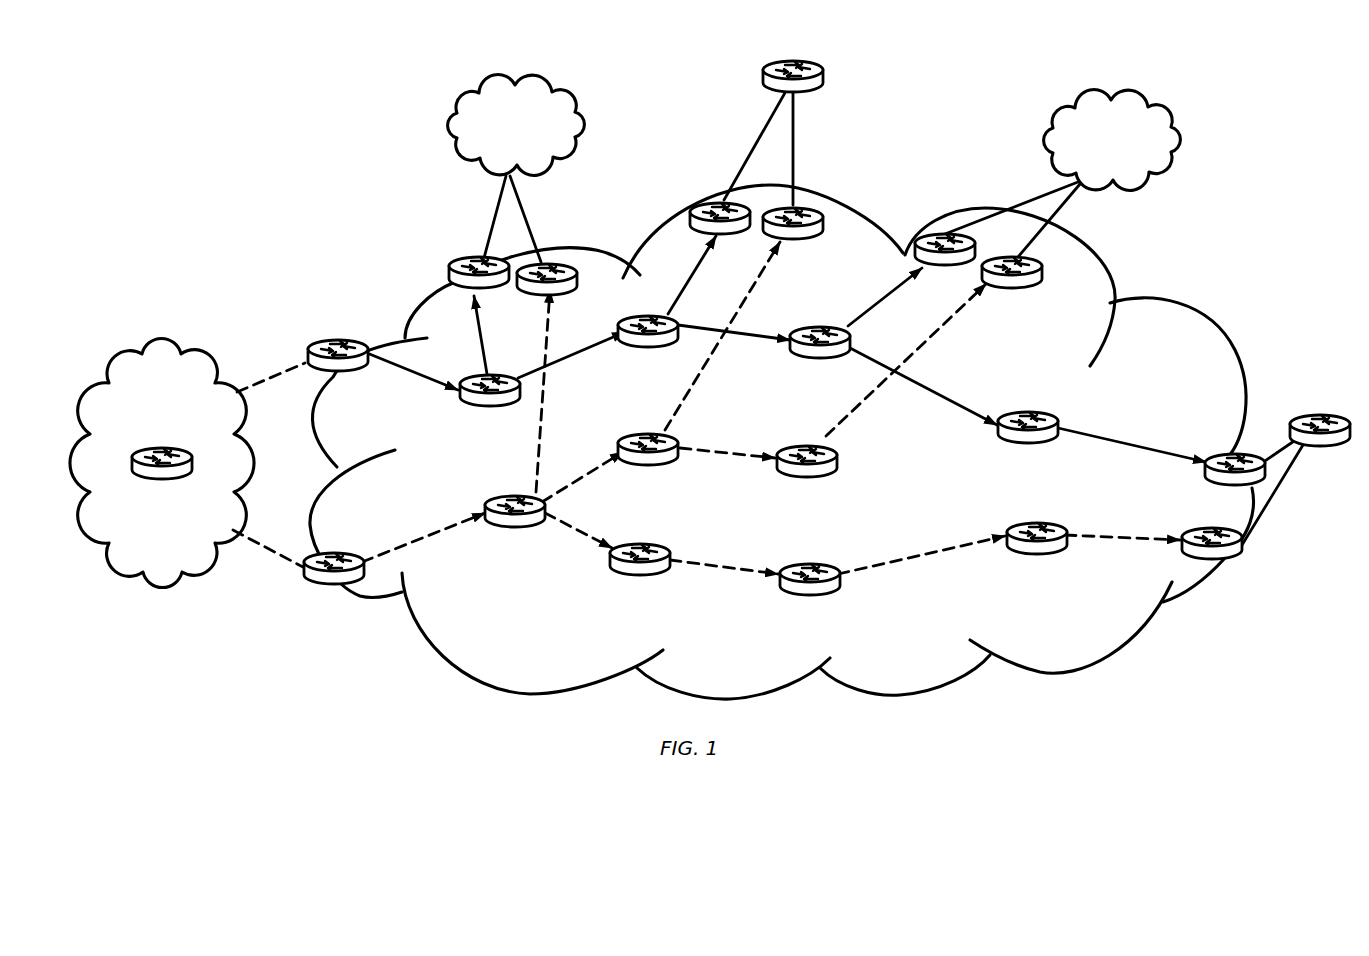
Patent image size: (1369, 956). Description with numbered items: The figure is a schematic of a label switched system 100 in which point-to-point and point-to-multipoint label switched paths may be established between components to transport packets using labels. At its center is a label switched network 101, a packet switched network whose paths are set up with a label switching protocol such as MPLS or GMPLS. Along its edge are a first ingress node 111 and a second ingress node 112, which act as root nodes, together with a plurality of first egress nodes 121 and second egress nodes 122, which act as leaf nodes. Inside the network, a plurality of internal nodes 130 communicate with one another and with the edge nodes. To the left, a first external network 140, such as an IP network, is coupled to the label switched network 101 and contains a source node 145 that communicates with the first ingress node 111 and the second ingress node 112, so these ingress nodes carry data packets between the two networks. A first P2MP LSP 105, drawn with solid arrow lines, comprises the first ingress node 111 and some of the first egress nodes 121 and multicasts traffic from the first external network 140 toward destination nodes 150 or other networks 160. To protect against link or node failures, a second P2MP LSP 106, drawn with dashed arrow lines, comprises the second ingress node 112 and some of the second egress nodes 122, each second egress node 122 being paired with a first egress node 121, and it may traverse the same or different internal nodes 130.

The label switched system 100 is at (260, 155).
The label switched network 101 is at (1193, 300).
The first P2MP LSP 105 is at (470, 341).
The second P2MP LSP 106 is at (537, 445).
The first ingress node 111 is at (340, 370).
The second ingress node 112 is at (337, 553).
The first egress nodes 121 is at (460, 257).
The second egress nodes 122 is at (567, 253).
The internal nodes 130 is at (490, 405).
The first external network 140 is at (212, 353).
The source node 145 is at (157, 474).
The destination nodes 150 is at (817, 87).
The other networks 160 is at (814, 168).